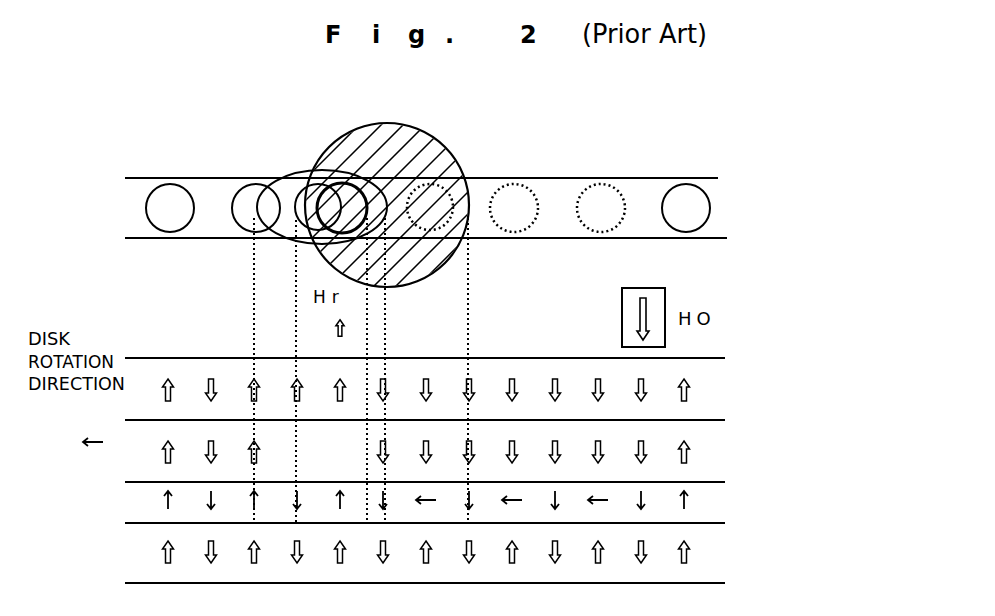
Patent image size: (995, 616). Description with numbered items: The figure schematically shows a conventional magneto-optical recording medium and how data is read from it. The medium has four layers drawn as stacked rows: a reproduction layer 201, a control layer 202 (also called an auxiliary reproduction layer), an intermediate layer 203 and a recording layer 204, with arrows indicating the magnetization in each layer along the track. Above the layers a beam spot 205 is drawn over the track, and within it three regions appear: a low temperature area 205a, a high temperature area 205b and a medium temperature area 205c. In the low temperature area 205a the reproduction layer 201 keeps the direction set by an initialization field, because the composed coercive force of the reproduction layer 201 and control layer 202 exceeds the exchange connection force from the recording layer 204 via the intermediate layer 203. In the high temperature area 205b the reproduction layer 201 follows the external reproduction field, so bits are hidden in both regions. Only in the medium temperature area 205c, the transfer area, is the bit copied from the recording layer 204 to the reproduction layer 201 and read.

The reproduction layer 201 is at (476, 389).
The control layer 202 is at (476, 457).
The intermediate layer 203 is at (476, 507).
The recording layer 204 is at (476, 558).
The beam spot 205 is at (432, 136).
The low temperature area 205a is at (460, 171).
The high temperature area 205b is at (308, 252).
The medium temperature area 205c is at (341, 183).